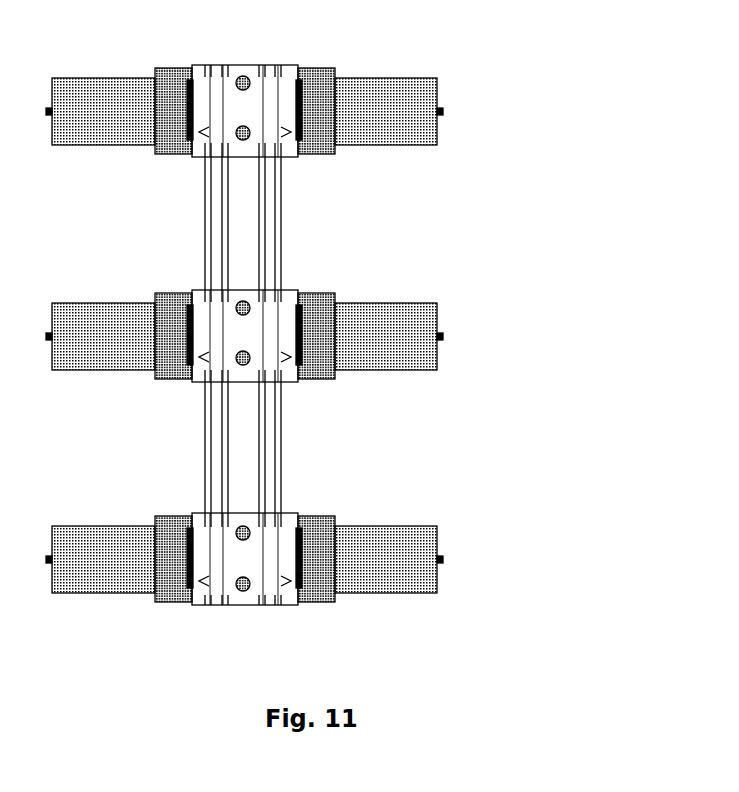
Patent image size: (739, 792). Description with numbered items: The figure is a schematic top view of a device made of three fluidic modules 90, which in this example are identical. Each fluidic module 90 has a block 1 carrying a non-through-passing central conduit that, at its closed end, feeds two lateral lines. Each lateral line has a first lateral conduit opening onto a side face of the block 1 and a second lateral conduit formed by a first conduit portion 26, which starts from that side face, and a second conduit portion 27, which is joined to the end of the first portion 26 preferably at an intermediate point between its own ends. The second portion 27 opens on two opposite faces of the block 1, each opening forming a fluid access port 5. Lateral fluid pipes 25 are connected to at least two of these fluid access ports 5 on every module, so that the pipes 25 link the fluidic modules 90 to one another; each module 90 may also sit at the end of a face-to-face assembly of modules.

The block 1 is at (247, 64).
The fluid access port 5 is at (207, 515).
The lateral fluid pipe 25 is at (204, 221).
The first conduit portion 26 is at (206, 133).
The second conduit portion 27 is at (210, 100).
The fluidic module 90 is at (492, 118).